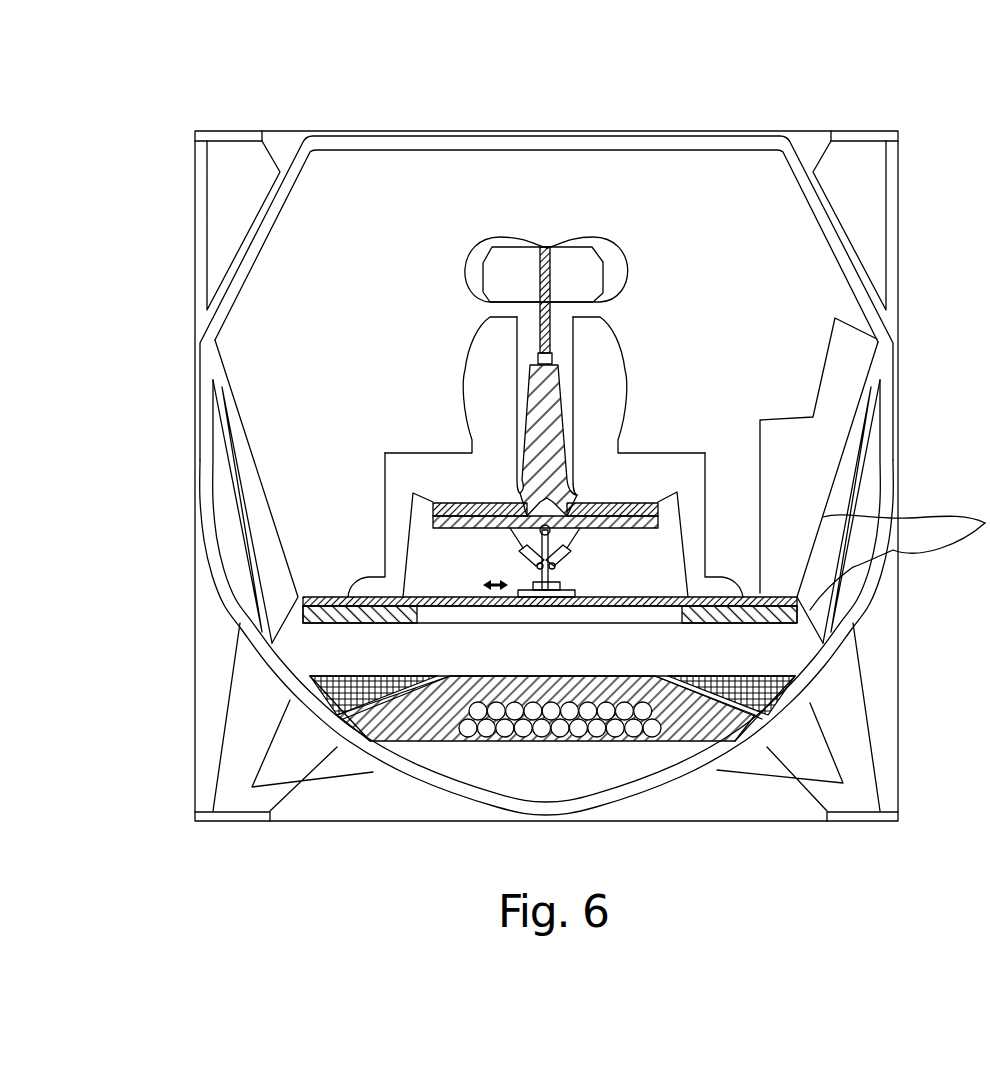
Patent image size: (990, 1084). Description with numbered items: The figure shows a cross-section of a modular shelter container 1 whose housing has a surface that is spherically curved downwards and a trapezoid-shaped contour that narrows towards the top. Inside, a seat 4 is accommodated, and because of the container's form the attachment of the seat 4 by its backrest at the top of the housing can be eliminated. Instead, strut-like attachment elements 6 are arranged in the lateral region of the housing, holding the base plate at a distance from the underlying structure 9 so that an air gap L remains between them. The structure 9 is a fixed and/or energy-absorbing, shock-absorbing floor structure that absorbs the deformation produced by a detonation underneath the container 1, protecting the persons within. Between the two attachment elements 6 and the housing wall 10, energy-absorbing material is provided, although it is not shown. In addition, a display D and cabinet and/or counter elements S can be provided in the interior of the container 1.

The container 1 is at (736, 116).
The seat 4 is at (797, 603).
The attachment elements 6 is at (280, 623).
The structure 9 is at (515, 755).
The housing wall 10 is at (240, 613).
The display D is at (848, 367).
The cabinet and/or counter elements S is at (805, 477).
The air gap L is at (640, 655).